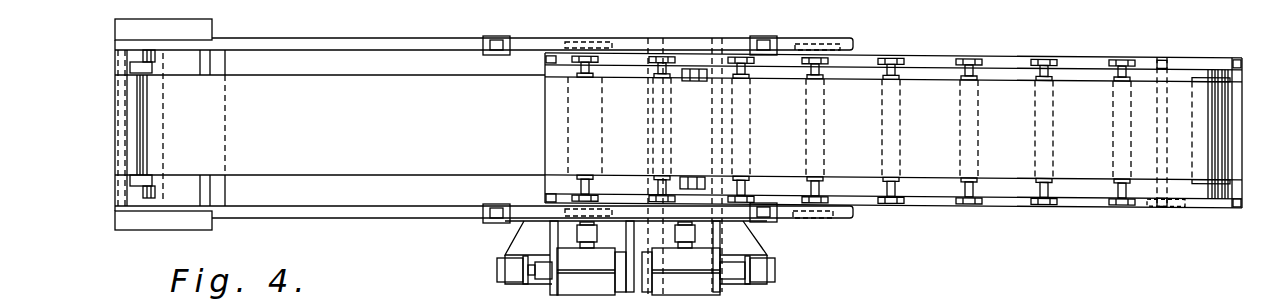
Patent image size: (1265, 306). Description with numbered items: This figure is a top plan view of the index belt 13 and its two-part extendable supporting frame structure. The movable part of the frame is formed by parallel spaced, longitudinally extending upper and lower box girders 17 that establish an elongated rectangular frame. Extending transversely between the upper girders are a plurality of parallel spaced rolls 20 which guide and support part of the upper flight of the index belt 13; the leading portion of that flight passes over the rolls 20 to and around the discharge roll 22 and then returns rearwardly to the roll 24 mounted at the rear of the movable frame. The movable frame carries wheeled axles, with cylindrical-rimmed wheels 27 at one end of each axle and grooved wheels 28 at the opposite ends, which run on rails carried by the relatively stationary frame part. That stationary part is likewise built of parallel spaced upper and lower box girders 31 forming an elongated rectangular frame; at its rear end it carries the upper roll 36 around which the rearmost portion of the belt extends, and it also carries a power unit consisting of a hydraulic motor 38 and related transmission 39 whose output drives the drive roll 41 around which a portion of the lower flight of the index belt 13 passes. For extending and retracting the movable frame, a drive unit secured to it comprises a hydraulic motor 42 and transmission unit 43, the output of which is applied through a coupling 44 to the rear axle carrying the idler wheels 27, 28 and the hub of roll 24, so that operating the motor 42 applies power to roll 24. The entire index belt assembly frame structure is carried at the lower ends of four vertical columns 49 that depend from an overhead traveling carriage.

The index belt 13 is at (1077, 97).
The upper and lower box girders 17 is at (921, 63).
The rolls 20 is at (1040, 92).
The discharge roll 22 is at (1203, 88).
The roll 24 is at (580, 153).
The wheels 27 is at (816, 42).
The wheels 28 is at (810, 220).
The upper and lower box girders 31 is at (382, 41).
The upper roll 36 is at (145, 73).
The hydraulic motor 38 is at (776, 268).
The transmission 39 is at (692, 291).
The drive roll 41 is at (683, 178).
The hydraulic motor 42 is at (497, 270).
The transmission unit 43 is at (599, 285).
The coupling 44 is at (568, 280).
The vertical columns 49 is at (503, 37).